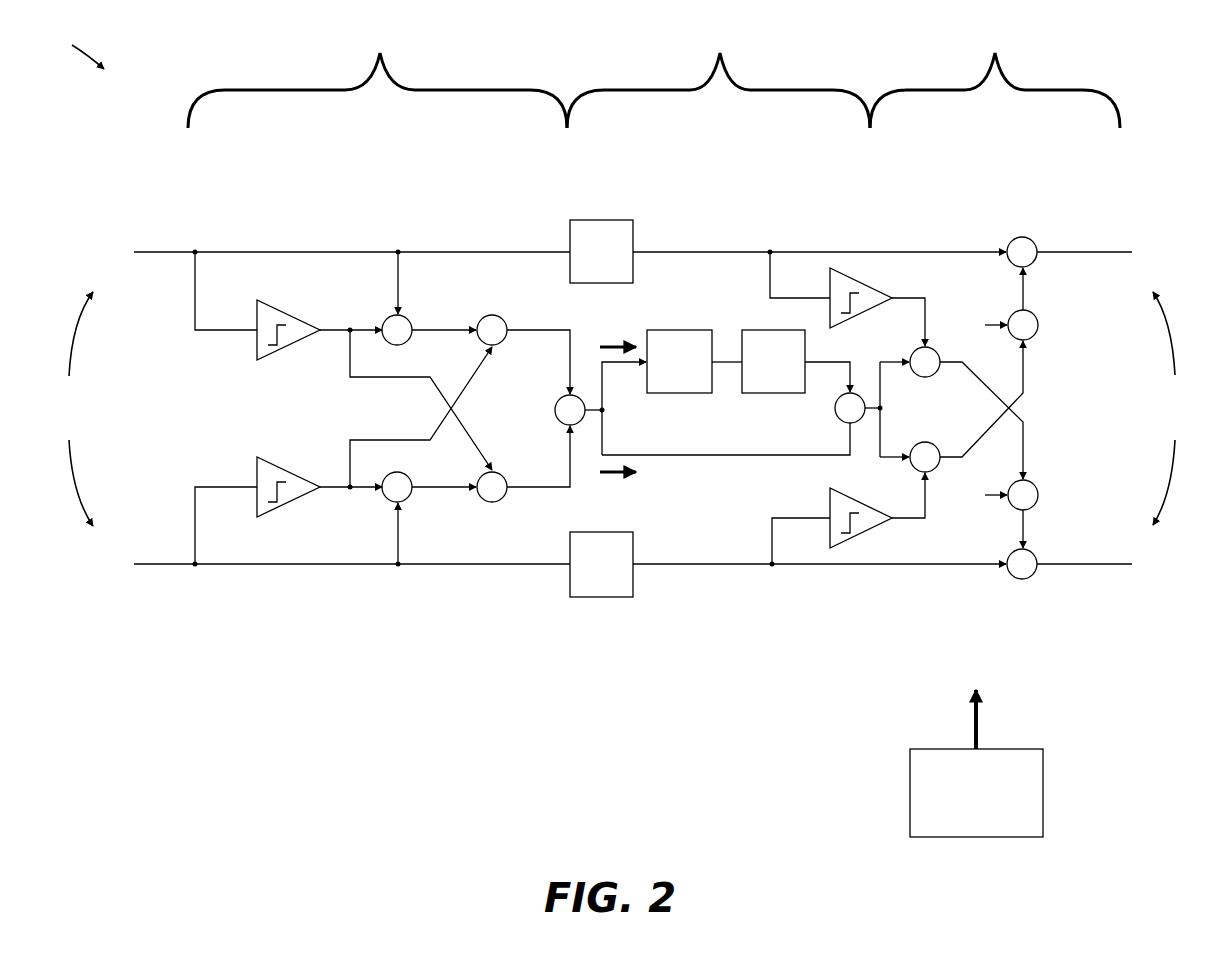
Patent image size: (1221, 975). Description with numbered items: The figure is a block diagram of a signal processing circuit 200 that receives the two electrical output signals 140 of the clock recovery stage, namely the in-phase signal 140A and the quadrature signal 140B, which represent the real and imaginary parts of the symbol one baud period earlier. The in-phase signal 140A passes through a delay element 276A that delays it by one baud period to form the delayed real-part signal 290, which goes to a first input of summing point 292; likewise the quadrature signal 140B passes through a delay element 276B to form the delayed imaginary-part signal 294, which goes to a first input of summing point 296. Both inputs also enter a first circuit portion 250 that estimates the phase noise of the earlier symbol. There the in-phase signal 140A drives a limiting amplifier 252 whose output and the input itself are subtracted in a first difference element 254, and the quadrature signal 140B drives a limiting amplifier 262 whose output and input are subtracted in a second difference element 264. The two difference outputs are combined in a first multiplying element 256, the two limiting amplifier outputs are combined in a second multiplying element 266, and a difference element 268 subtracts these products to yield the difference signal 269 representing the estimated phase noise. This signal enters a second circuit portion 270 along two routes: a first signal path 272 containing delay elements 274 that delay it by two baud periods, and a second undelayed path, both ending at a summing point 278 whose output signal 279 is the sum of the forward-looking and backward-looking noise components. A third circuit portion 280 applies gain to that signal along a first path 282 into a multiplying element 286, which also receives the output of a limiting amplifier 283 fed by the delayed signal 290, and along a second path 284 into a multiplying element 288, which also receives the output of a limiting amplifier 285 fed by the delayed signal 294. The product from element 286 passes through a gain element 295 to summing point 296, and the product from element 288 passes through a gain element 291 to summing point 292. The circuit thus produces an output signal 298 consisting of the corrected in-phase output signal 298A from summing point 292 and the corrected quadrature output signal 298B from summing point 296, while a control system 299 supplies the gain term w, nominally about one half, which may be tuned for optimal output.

The signal processing circuit 200 is at (67, 49).
The electrical output signals 140 is at (74, 409).
The in-phase (I) signal 140A is at (232, 251).
The quadrature (Q) signal 140B is at (245, 565).
The first circuit portion 250 is at (377, 78).
The limiting amplifier 252 is at (270, 301).
The first difference element 254 is at (405, 316).
The first multiplying element 256 is at (500, 316).
The limiting amplifier 262 is at (290, 518).
The second difference element 264 is at (390, 503).
The second multiplying element 266 is at (490, 503).
The difference element 268 is at (558, 425).
The difference signal 269 is at (604, 412).
The second circuit portion 270 is at (718, 78).
The first signal path 272 is at (606, 348).
The delay elements 274 is at (680, 330).
The delay element 276A is at (603, 220).
The delay element 276B is at (603, 598).
The summing point 278 is at (835, 410).
The output signal 279 is at (883, 411).
The third circuit portion 280 is at (995, 78).
The first path 282 is at (895, 361).
The limiting amplifier 283 is at (850, 268).
The second path 284 is at (905, 458).
The limiting amplifier 285 is at (840, 549).
The multiplying element 286 is at (932, 346).
The multiplying element 288 is at (935, 474).
The delayed Re{E(k)} signal 290 is at (900, 251).
The gain element 291 is at (1038, 326).
The summing point 292 is at (1025, 237).
The delayed Im{E(k)} signal 294 is at (876, 566).
The gain element 295 is at (1038, 496).
The summing point 296 is at (1030, 580).
The output signal 298 is at (1173, 408).
The output signal 298A is at (1095, 253).
The output signal 298B is at (1108, 563).
The control system 299 is at (918, 749).